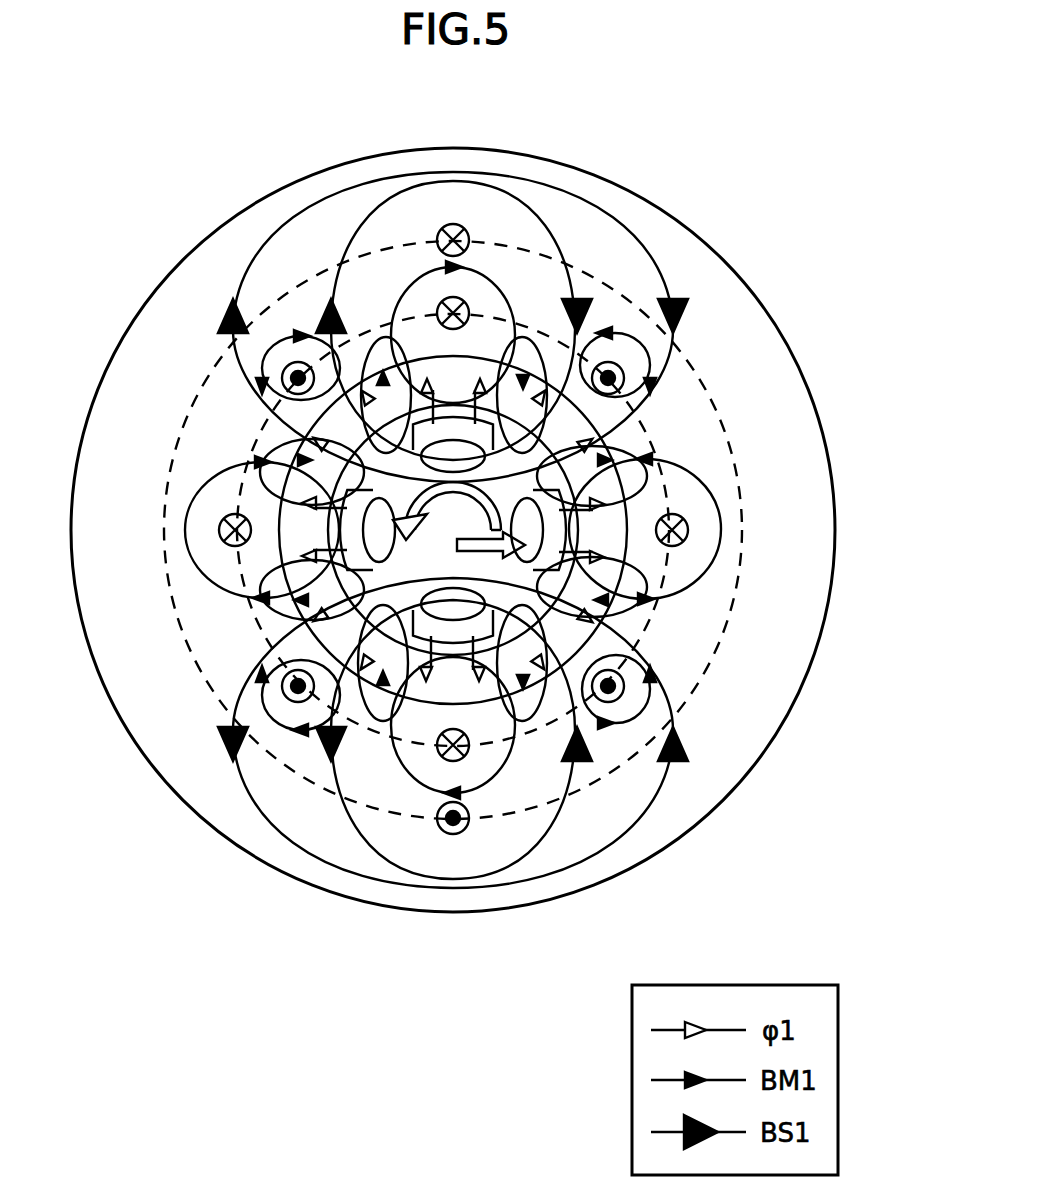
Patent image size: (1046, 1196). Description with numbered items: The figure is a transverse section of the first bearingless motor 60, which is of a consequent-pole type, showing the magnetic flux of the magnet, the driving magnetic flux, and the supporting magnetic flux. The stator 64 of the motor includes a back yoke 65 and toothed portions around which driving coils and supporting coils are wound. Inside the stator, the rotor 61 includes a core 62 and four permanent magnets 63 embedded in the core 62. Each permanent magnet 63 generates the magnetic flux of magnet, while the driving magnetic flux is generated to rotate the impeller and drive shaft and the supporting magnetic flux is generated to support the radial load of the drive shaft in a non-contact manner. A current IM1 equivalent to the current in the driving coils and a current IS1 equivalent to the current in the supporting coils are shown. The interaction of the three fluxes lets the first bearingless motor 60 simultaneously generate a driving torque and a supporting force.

The first bearingless motor 60 is at (723, 163).
The rotor 61 is at (548, 447).
The core 62 is at (528, 456).
The permanent magnets 63 is at (557, 530).
The stator 64 is at (617, 183).
The back yoke 65 is at (540, 172).
The current IS1 is at (453, 224).
The current IM1 is at (233, 517).